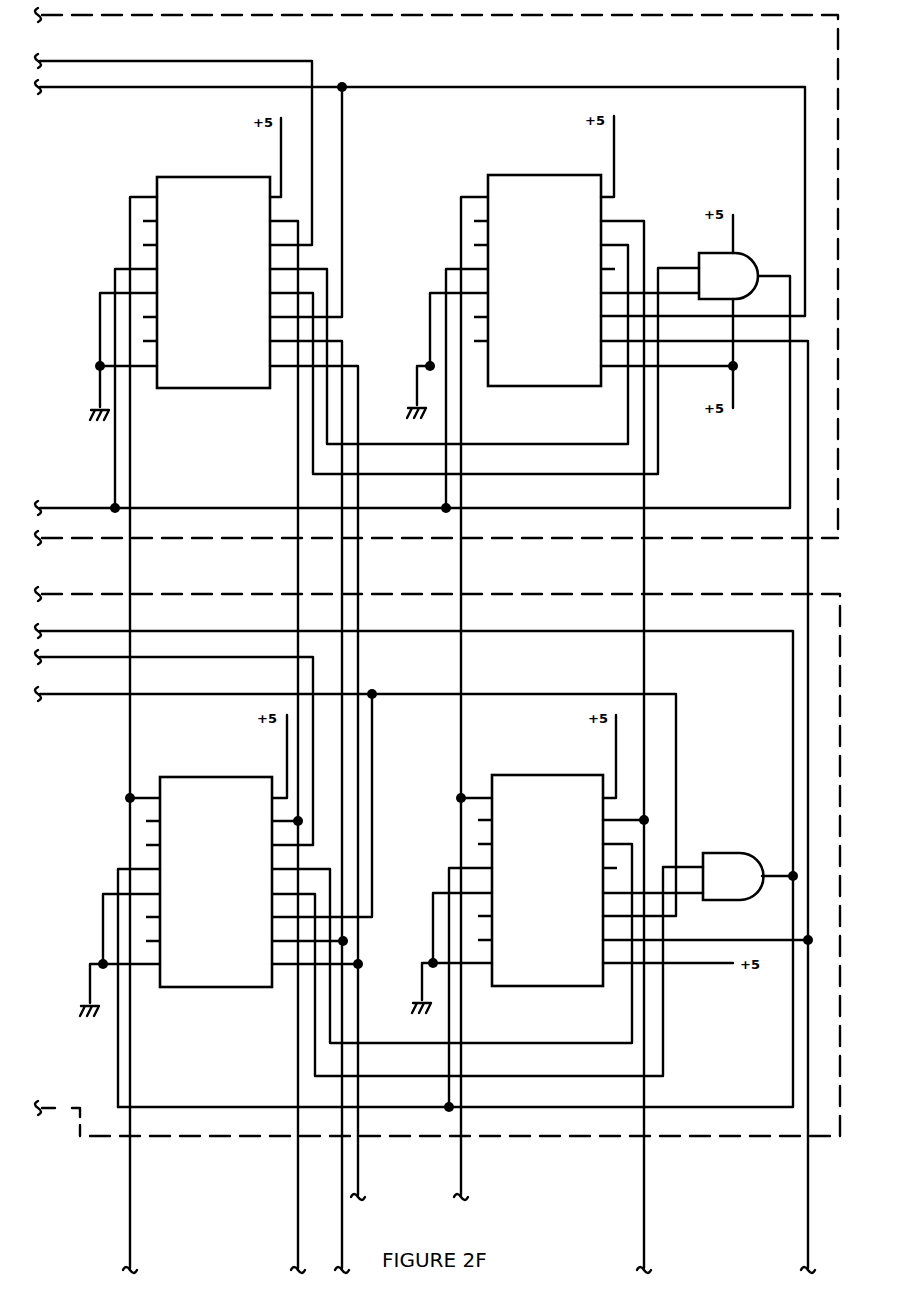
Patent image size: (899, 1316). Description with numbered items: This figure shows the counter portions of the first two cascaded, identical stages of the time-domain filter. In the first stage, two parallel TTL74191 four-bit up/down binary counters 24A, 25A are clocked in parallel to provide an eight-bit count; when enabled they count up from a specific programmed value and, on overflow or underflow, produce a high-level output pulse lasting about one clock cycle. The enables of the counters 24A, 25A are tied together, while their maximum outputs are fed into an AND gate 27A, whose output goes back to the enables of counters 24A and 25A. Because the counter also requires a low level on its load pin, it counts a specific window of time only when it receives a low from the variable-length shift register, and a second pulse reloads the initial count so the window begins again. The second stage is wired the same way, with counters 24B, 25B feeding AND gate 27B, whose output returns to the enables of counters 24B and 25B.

The counter 24A is at (233, 177).
The counter 25A is at (505, 175).
The AND gate 27A is at (750, 258).
The counter 24B is at (183, 988).
The counter 25B is at (507, 986).
The AND gate 27B is at (718, 853).